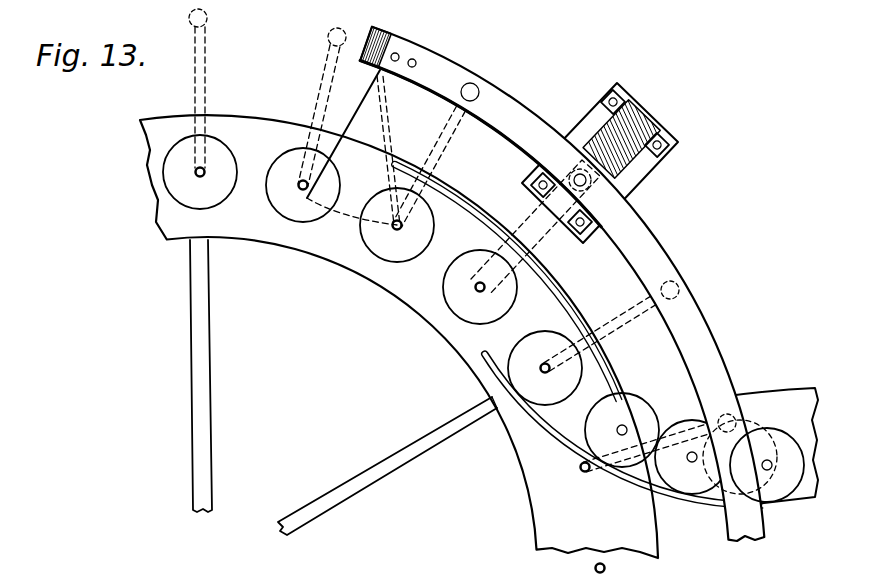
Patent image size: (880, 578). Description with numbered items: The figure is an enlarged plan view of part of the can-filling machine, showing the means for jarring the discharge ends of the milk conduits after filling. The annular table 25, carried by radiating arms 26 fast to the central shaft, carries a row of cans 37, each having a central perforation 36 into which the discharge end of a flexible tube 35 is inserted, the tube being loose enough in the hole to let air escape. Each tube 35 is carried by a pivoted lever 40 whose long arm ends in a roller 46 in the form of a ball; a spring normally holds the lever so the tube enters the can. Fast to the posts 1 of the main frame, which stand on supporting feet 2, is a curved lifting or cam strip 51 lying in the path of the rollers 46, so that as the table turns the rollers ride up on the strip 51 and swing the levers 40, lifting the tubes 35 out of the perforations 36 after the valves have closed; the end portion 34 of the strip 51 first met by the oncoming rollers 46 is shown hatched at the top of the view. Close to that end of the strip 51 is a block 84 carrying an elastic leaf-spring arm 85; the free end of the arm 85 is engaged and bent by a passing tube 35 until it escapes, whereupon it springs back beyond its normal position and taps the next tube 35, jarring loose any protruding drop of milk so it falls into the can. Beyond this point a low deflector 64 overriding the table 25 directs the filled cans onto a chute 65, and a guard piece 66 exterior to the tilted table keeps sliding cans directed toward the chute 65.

The post 1 is at (640, 120).
The supporting foot 2 is at (638, 170).
The annular table 25 is at (331, 263).
The arm 26 is at (287, 515).
The end block of track band 34 is at (367, 33).
The tube 35 is at (545, 363).
The central perforation 36 is at (691, 452).
The can 37 is at (453, 287).
The lever 40 is at (315, 106).
The roller 46 is at (330, 44).
The curved strip 51 is at (701, 334).
The deflector 64 is at (555, 436).
The chute 65 is at (769, 447).
The guard piece 66 is at (477, 200).
The block 84 is at (420, 63).
The elastic arm 85 is at (384, 137).